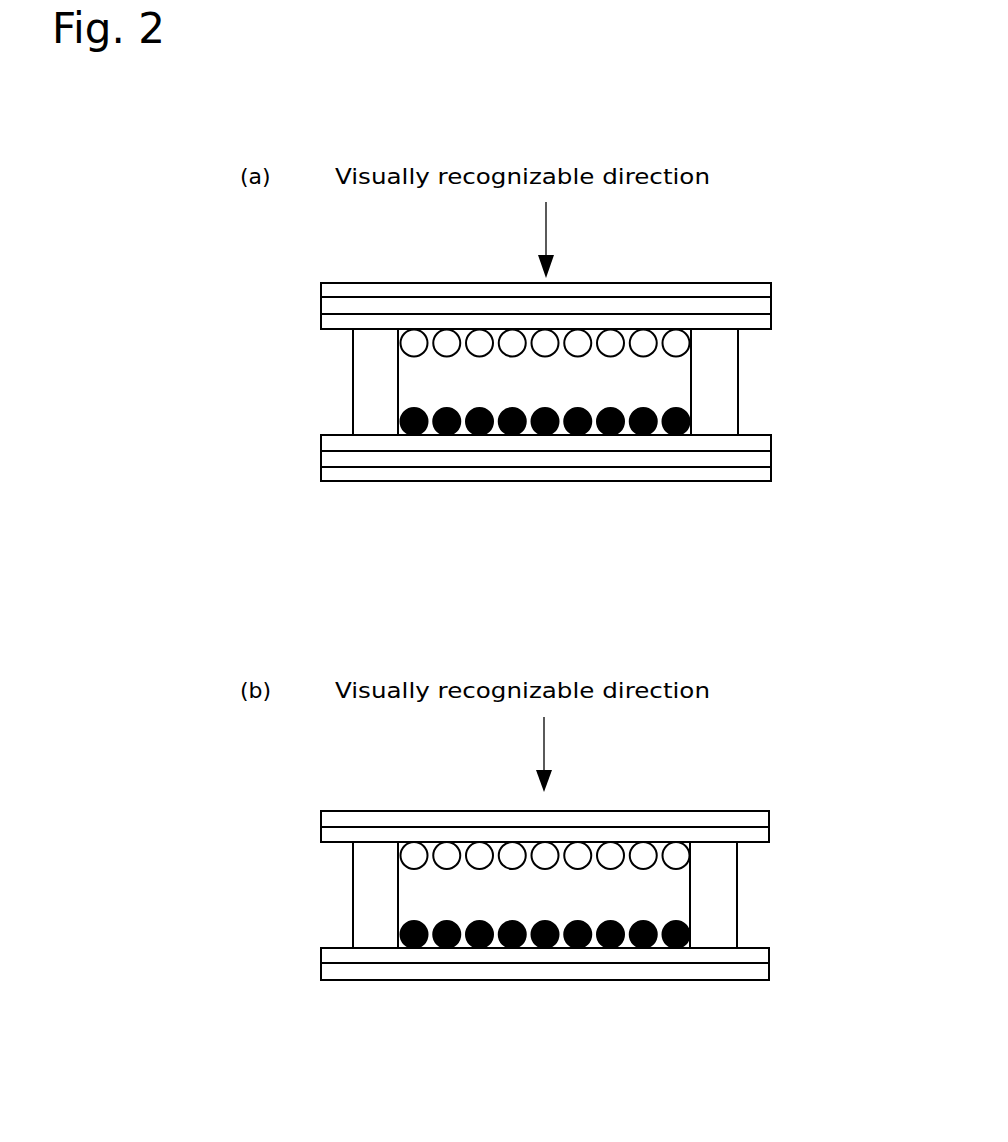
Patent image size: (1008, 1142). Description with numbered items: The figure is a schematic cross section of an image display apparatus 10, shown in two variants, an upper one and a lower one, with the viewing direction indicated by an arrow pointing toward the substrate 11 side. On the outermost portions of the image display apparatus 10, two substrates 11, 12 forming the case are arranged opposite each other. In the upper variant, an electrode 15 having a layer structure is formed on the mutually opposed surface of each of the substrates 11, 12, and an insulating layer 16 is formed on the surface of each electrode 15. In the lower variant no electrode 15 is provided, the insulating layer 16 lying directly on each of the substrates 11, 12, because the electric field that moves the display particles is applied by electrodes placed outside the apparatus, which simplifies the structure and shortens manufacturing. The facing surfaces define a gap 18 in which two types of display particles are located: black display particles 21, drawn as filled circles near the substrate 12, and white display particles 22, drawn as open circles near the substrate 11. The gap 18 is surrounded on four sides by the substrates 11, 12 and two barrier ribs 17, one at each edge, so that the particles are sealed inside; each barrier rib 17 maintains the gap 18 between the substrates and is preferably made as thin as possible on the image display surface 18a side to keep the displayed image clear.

The image display apparatus 10 is at (724, 252).
The substrate 11 is at (321, 290).
The substrate 12 is at (321, 474).
The electrode 15 is at (321, 305).
The insulating layer 16 is at (321, 322).
The barrier rib 17 is at (376, 422).
The gap 18 is at (678, 383).
The image display surface 18a is at (688, 282).
The black display particles 21 is at (612, 436).
The white display particles 22 is at (612, 343).